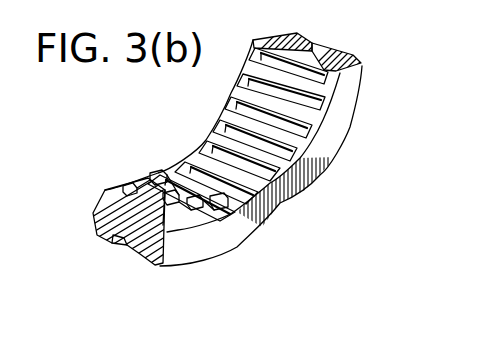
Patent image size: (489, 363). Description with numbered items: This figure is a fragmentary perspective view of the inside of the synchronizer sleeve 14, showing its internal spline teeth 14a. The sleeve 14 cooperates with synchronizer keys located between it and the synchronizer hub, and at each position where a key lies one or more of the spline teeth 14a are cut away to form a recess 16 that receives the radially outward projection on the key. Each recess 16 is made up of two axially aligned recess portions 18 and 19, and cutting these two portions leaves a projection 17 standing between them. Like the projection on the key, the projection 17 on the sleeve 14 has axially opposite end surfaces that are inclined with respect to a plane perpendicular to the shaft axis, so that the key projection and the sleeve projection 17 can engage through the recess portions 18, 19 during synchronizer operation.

The synchronizer sleeve 14 is at (322, 179).
The spline teeth 14a is at (298, 70).
The recess 16 is at (213, 215).
The projection 17 is at (158, 188).
The recess portion 18 is at (98, 206).
The recess portion 19 is at (132, 240).